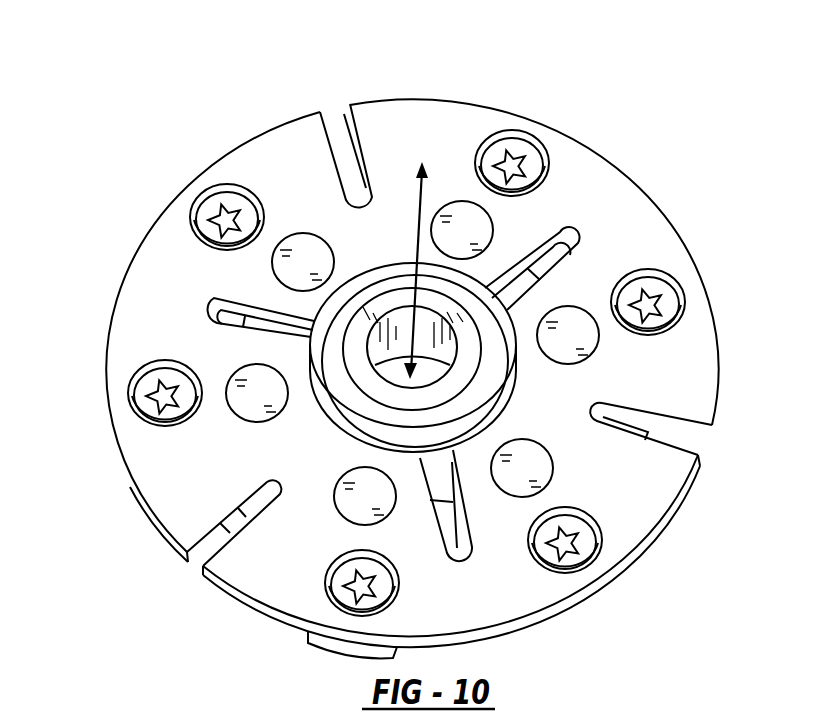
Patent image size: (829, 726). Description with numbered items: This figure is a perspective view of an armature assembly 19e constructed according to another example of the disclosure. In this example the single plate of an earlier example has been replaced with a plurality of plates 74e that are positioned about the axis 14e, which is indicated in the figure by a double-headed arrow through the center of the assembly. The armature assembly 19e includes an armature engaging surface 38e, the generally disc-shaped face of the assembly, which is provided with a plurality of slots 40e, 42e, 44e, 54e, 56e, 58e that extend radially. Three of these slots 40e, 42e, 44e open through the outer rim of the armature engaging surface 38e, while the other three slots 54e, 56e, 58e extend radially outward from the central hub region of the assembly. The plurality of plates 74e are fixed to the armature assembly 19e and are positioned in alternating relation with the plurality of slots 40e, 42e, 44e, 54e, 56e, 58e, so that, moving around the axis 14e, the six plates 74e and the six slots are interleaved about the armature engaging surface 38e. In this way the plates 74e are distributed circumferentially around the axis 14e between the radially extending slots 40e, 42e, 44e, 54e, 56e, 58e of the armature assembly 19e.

The armature assembly 19e is at (141, 101).
The armature engaging surface 38e is at (583, 180).
The slot 42e is at (330, 140).
The slot 40e is at (688, 432).
The slot 44e is at (220, 543).
The axis 14e is at (404, 232).
The slot 58e is at (213, 307).
The slot 56e is at (575, 238).
The slot 54e is at (465, 516).
The plates 74e is at (305, 260).